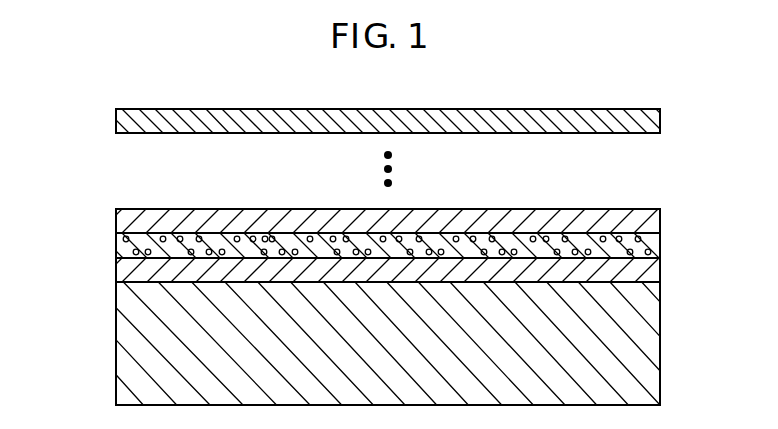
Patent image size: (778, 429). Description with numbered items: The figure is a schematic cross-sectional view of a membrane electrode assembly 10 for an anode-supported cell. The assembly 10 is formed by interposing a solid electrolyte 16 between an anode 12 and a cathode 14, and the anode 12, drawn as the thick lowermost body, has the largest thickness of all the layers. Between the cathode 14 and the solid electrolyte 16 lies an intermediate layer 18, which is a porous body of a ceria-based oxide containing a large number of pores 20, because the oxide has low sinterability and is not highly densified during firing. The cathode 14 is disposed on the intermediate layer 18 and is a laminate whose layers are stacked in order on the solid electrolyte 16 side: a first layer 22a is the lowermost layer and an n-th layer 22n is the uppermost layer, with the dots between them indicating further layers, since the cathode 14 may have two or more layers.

The membrane electrode assembly 10 is at (199, 74).
The anode 12 is at (642, 340).
The cathode 14 is at (100, 107).
The solid electrolyte 16 is at (640, 270).
The intermediate layer 18 is at (645, 244).
The pores 20 is at (265, 236).
The first layer 22a is at (640, 221).
The n-th layer 22n is at (645, 118).